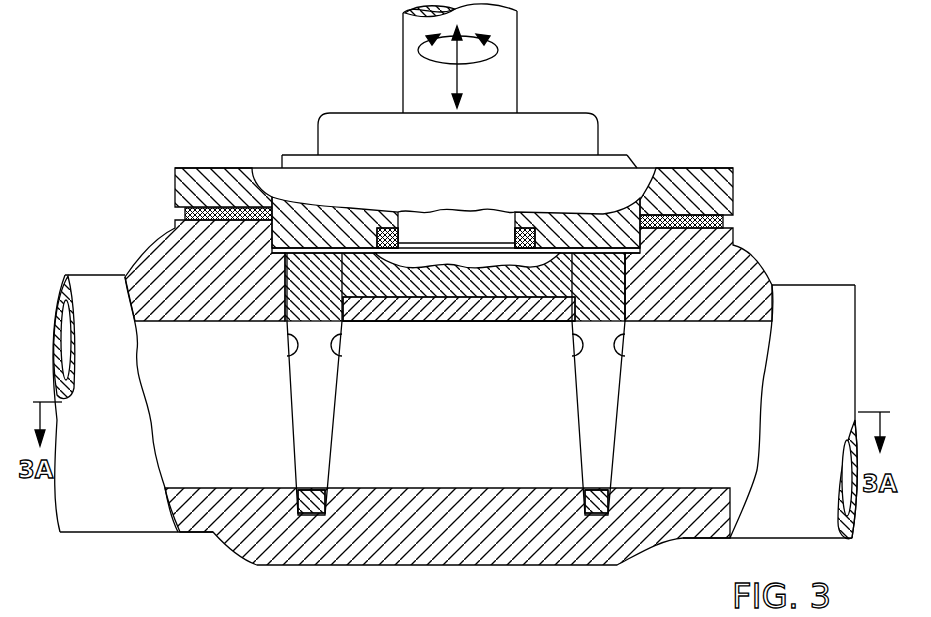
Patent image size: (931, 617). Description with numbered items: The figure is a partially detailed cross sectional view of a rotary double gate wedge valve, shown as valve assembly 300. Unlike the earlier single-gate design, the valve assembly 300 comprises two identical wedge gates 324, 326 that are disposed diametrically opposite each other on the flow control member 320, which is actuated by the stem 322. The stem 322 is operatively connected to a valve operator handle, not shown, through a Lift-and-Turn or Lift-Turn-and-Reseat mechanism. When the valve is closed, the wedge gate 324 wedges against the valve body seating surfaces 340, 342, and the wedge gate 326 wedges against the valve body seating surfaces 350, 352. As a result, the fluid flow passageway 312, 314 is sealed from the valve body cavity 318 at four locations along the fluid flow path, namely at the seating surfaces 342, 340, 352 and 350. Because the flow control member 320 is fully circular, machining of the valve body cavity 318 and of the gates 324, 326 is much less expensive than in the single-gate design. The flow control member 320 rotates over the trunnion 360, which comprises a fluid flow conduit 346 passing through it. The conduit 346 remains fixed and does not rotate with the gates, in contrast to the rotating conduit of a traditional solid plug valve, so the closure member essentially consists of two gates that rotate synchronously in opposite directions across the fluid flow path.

The valve assembly 300 is at (455, 299).
The fluid flow passageway 312 is at (741, 423).
The fluid flow passageway 314 is at (197, 412).
The valve body cavity 318 is at (603, 256).
The flow control member 320 is at (466, 270).
The stem 322 is at (524, 76).
The wedge gate 324 is at (298, 283).
The wedge gate 326 is at (620, 285).
The valve body seating surface 340 is at (298, 384).
The valve body seating surface 342 is at (287, 357).
The fluid flow conduit 346 is at (422, 422).
The valve body seating surface 350 is at (622, 368).
The valve body seating surface 352 is at (587, 384).
The trunnion 360 is at (447, 318).